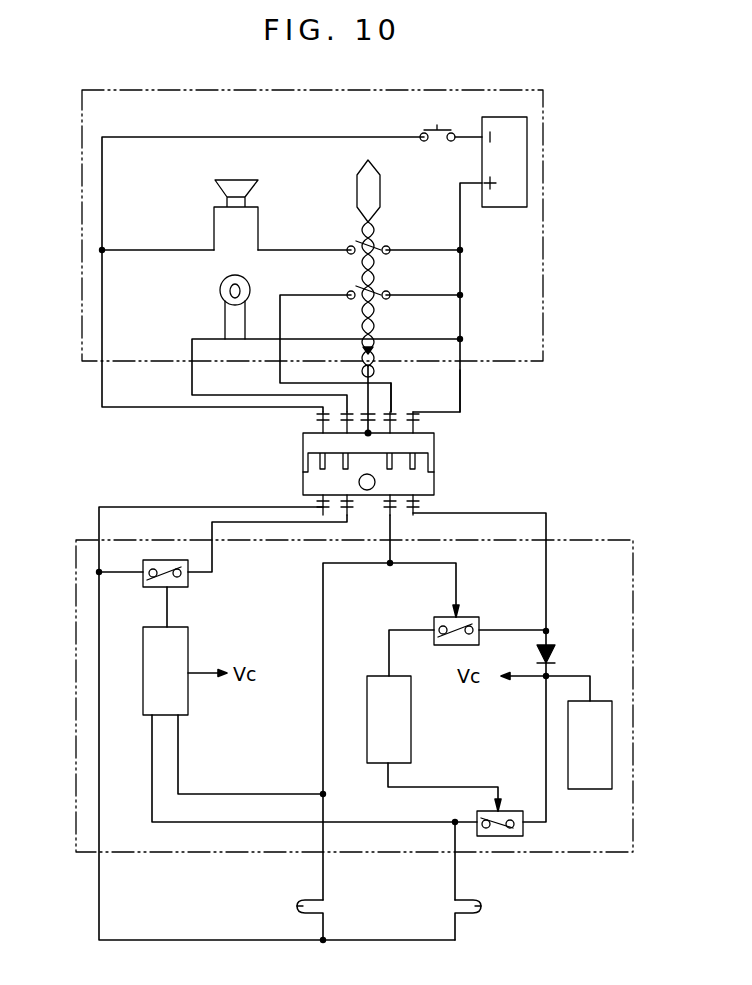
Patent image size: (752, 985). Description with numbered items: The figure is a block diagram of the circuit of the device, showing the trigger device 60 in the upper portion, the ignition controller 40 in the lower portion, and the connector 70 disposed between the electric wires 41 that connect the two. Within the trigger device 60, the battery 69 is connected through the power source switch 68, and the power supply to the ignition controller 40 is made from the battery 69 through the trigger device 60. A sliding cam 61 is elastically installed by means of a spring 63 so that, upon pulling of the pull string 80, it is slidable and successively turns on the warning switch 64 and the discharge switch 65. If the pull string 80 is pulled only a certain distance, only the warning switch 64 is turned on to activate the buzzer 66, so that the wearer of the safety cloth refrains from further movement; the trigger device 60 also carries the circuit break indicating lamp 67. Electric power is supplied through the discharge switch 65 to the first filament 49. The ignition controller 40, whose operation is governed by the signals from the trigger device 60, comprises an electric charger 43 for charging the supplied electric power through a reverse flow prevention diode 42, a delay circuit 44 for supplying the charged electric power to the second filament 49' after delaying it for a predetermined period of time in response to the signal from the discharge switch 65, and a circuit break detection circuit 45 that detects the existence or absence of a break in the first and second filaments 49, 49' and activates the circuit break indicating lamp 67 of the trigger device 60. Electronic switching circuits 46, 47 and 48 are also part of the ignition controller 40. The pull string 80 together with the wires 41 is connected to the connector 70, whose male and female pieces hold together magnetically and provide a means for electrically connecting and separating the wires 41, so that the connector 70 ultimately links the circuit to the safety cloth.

The ignition controller 40 is at (88, 751).
The wires 41 is at (461, 386).
The reverse flow prevention diode 42 is at (556, 653).
The electric charger 43 is at (586, 781).
The delay circuit 44 is at (367, 712).
The circuit break detection circuit 45 is at (184, 704).
The electronic switching circuit 46 is at (510, 810).
The electronic switching circuit 47 is at (475, 617).
The electronic switching circuit 48 is at (170, 560).
The first filament 49 is at (263, 919).
The second filament 49' is at (527, 917).
The trigger device 60 is at (526, 296).
The sliding cam 61 is at (359, 182).
The spring 63 is at (358, 318).
The warning switch 64 is at (378, 257).
The discharge switch 65 is at (378, 301).
The buzzer 66 is at (244, 184).
The circuit break indicating lamp 67 is at (251, 284).
The power source switch 68 is at (436, 128).
The battery 69 is at (513, 170).
The connector 70 is at (428, 485).
The pull string 80 is at (372, 390).